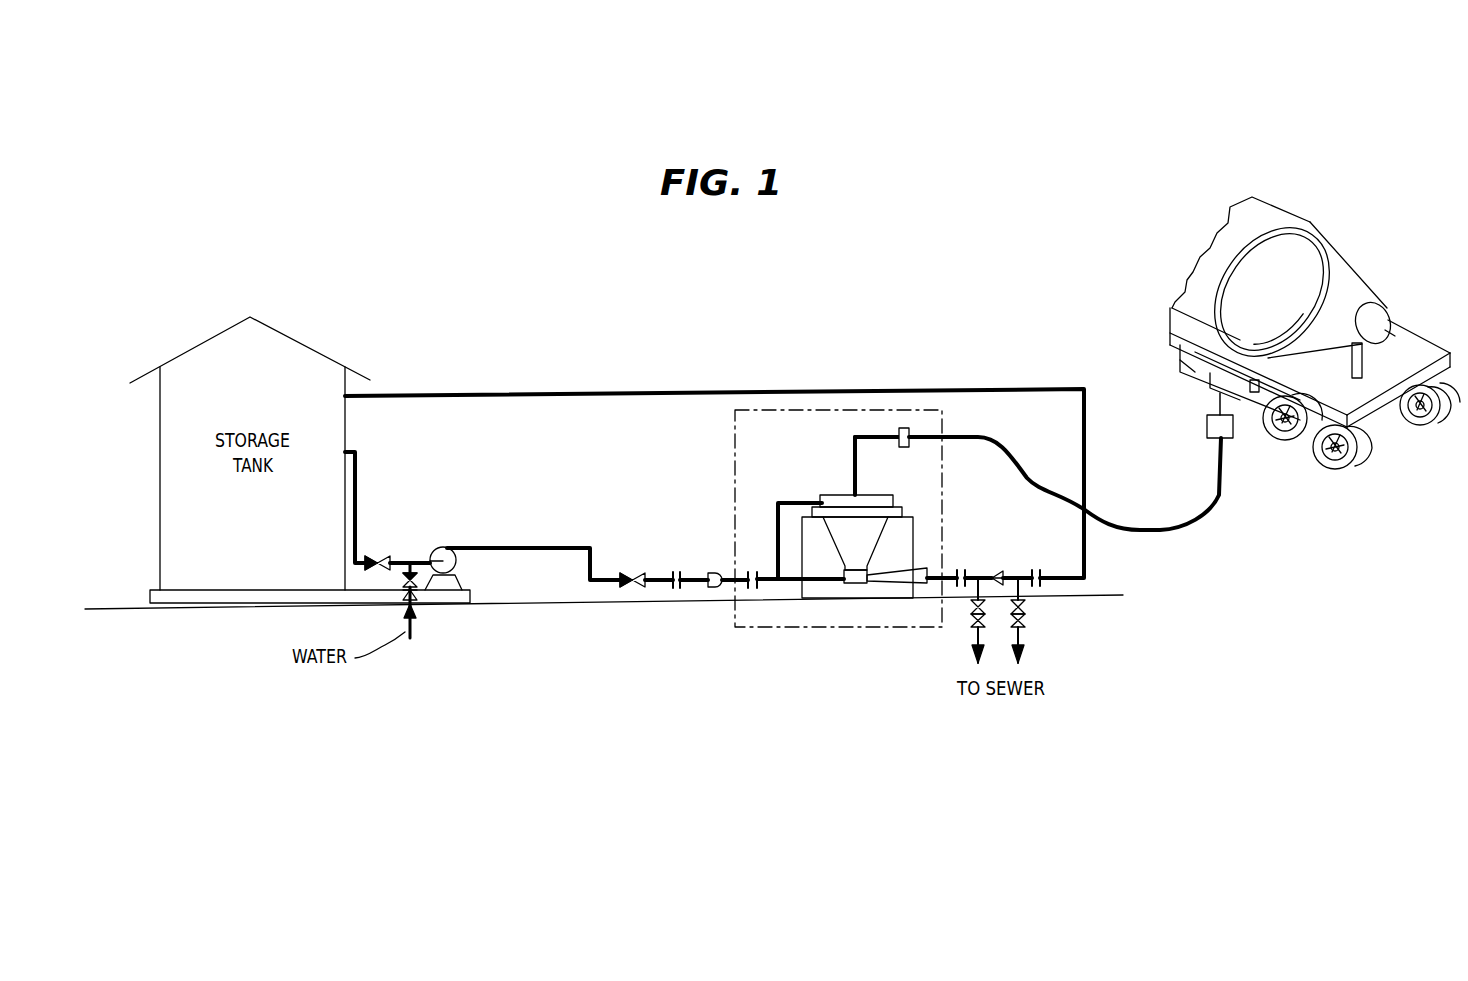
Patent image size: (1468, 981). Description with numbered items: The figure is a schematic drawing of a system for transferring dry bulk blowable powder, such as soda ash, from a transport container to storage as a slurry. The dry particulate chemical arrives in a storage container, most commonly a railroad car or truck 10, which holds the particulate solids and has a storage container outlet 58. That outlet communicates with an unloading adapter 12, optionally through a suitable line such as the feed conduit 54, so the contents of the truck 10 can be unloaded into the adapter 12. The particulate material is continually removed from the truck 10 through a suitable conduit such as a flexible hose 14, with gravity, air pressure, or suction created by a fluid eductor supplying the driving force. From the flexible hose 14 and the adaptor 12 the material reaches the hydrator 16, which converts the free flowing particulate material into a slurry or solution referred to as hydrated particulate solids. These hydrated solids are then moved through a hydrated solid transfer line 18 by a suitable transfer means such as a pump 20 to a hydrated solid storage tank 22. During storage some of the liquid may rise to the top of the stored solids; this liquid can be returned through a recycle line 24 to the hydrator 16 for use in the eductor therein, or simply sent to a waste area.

The truck 10 is at (1283, 331).
The adapter 12 is at (1250, 437).
The flexible hose 14 is at (1142, 532).
The hydrator 16 is at (817, 638).
The hydrated solid transfer line 18 is at (657, 391).
The pump 20 is at (453, 605).
The hydrated solid storage tank 22 is at (227, 616).
The recycle line 24 is at (493, 548).
The feed conduit 54 is at (1207, 408).
The storage container outlet 58 is at (1182, 358).